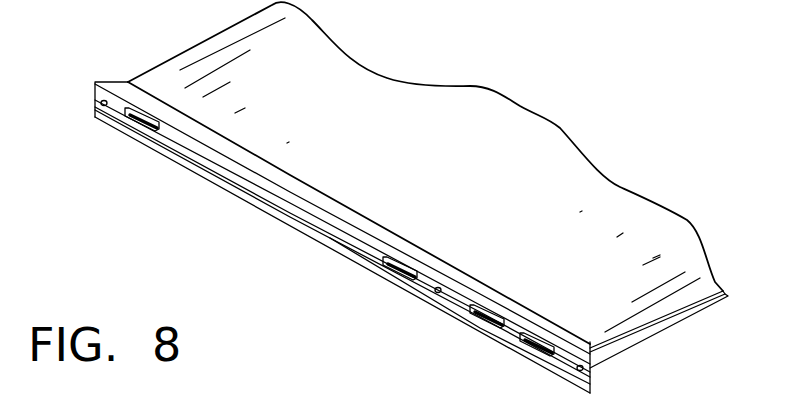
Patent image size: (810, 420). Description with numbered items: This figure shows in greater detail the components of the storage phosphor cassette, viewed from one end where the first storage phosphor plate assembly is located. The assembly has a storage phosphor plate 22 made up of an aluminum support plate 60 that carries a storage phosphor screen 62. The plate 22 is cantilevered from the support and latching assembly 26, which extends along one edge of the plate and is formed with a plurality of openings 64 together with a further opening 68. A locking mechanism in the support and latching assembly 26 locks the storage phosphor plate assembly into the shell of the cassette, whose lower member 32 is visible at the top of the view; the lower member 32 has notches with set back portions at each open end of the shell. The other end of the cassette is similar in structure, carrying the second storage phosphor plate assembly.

The storage phosphor plate 22 is at (413, 196).
The support and latching assembly 26 is at (256, 214).
The lower member 32 is at (552, 0).
The aluminum support plate 60 is at (643, 335).
The storage phosphor screen 62 is at (545, 133).
The openings 64 is at (132, 128).
The opening 68 is at (436, 295).